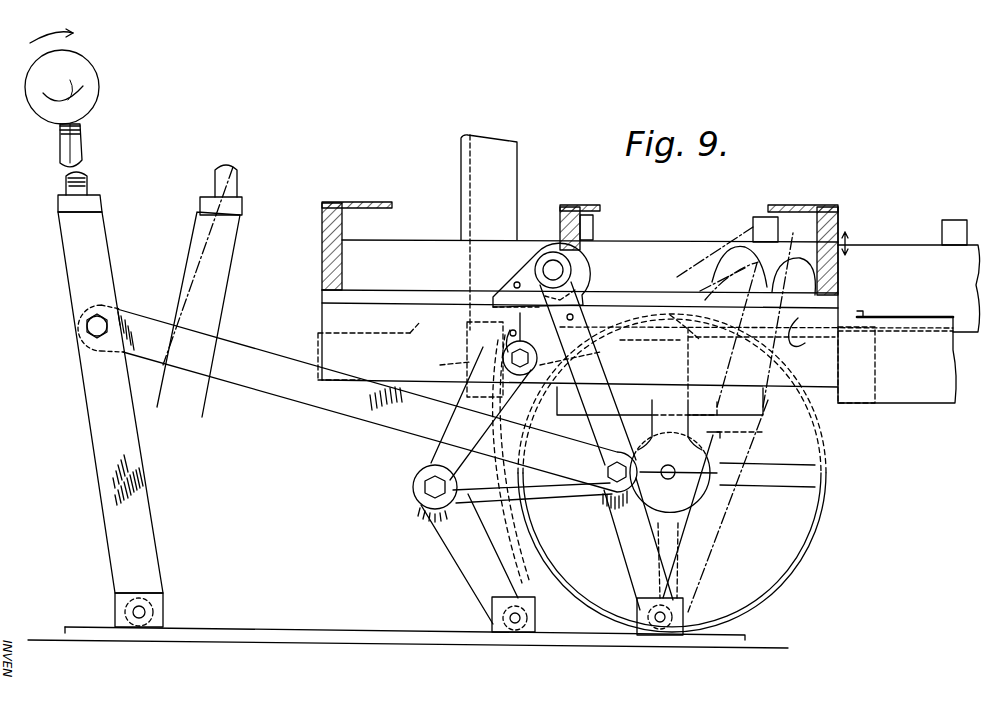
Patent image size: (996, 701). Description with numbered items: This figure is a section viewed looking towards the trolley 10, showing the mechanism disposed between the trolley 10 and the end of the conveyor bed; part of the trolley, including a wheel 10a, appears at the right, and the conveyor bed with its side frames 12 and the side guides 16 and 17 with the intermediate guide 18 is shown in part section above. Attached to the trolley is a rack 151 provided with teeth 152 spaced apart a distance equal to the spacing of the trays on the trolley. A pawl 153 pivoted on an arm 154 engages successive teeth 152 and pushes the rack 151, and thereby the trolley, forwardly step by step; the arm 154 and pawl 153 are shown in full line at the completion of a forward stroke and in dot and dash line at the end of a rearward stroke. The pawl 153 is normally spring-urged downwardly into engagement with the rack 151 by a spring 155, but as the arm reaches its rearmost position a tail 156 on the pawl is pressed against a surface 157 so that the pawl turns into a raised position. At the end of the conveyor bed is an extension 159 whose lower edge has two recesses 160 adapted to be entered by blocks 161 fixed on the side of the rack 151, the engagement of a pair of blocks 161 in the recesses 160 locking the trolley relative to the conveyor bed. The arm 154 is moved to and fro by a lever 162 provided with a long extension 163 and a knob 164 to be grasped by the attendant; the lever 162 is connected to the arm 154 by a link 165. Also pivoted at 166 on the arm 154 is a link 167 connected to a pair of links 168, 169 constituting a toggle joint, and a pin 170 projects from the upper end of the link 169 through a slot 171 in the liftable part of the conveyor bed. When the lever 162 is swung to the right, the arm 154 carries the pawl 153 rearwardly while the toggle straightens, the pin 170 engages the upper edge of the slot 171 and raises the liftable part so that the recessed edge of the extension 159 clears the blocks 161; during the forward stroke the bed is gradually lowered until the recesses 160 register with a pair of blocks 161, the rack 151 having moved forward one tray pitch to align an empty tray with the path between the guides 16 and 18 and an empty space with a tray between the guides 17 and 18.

The trolley 10 is at (467, 167).
The wheel 10a is at (822, 535).
The side frames 12 is at (335, 262).
The side guide 16 is at (822, 206).
The side guide 17 is at (353, 188).
The intermediate guide 18 is at (579, 206).
The rack 151 is at (933, 381).
The teeth 152 is at (691, 297).
The pawl 153 is at (526, 276).
The arm 154 is at (592, 390).
The spring 155 is at (564, 275).
The tail 156 is at (583, 291).
The surface 157 is at (795, 332).
The extension 159 is at (412, 334).
The recesses 160 is at (480, 328).
The blocks 161 is at (462, 363).
The lever 162 is at (98, 283).
The long extension 163 is at (84, 146).
The knob 164 is at (87, 96).
The link 165 is at (369, 424).
The pivot 166 is at (612, 500).
The link 167 is at (554, 495).
The link 168 is at (460, 556).
The link 169 is at (433, 476).
The pin 170 is at (503, 358).
The slot 171 is at (510, 336).